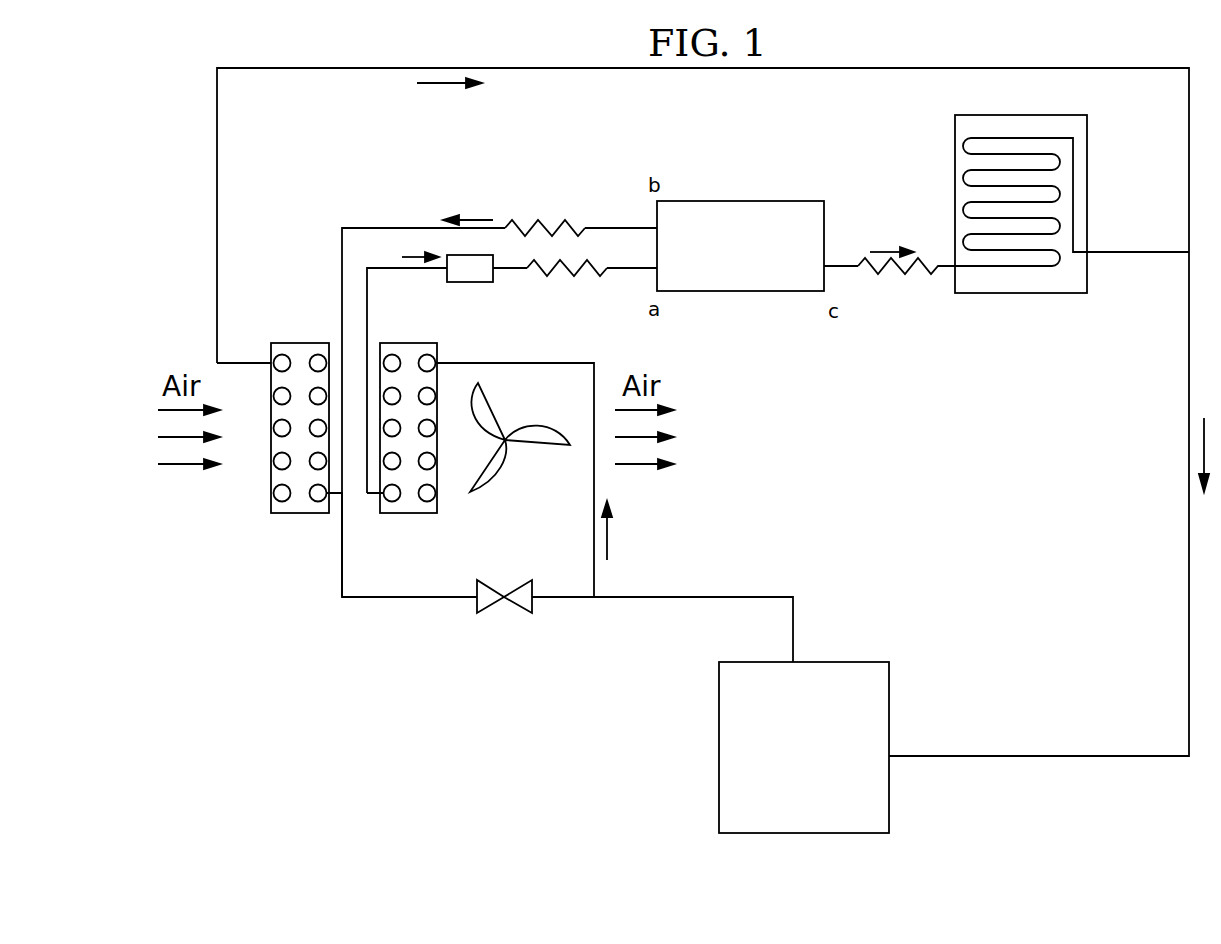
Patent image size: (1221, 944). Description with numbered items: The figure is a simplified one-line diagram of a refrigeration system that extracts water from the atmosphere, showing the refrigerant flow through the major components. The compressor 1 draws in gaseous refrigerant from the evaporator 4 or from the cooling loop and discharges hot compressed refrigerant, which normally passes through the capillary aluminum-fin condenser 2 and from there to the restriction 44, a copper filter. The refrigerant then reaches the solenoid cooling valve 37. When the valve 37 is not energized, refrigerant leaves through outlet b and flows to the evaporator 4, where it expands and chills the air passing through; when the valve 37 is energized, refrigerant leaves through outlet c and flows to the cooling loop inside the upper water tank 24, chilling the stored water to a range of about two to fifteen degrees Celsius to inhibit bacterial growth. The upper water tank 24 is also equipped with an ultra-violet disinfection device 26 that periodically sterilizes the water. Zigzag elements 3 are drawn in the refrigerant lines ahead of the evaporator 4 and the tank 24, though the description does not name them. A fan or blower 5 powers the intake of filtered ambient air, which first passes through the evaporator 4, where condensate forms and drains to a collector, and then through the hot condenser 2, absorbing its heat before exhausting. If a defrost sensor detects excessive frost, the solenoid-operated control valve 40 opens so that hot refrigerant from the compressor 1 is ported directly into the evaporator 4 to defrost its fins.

The compressor 1 is at (719, 782).
The condenser 2 is at (405, 513).
The expansion device 3 is at (540, 225).
The evaporator 4 is at (312, 513).
The fan/blower 5 is at (510, 450).
The upper water tank 24 is at (1072, 224).
The ultra-violet disinfection device 26 is at (1027, 266).
The solenoid cooling valve 37 is at (725, 291).
The solenoid-operated control valve 40 is at (492, 580).
The restriction (copper filter) 44 is at (482, 282).